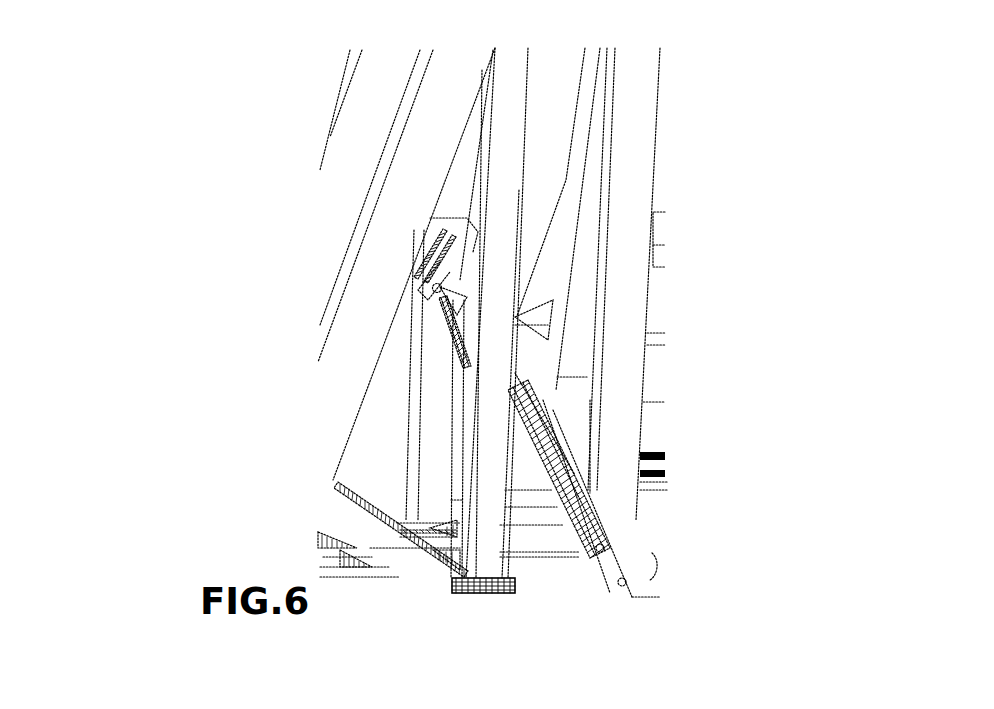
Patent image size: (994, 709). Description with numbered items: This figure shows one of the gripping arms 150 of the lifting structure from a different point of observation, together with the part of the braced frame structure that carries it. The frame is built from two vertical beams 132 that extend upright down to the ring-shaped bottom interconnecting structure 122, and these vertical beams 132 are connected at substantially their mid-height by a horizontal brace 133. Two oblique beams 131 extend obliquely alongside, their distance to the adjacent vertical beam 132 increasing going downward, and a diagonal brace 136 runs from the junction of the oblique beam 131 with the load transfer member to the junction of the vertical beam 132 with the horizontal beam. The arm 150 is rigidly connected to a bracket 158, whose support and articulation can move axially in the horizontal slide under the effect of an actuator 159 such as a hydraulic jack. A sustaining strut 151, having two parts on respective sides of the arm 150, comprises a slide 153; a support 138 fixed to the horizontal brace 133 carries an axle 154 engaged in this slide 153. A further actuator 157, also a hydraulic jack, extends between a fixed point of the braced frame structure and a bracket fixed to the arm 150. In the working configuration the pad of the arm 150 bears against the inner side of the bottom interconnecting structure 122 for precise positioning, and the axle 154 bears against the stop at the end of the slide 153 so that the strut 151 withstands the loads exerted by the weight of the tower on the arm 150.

The bottom interconnecting structure 122 is at (632, 515).
The oblique beam 131 is at (352, 92).
The vertical beam 132 is at (630, 78).
The horizontal brace 133 is at (472, 270).
The diagonal brace 136 is at (575, 404).
The support 138 is at (460, 267).
The gripping arm 150 is at (567, 575).
The sustaining strut 151 is at (457, 335).
The slide 153 is at (447, 317).
The axle 154 is at (447, 287).
The actuator 157 is at (530, 520).
The bracket 158 is at (453, 540).
The actuator 159 is at (340, 548).